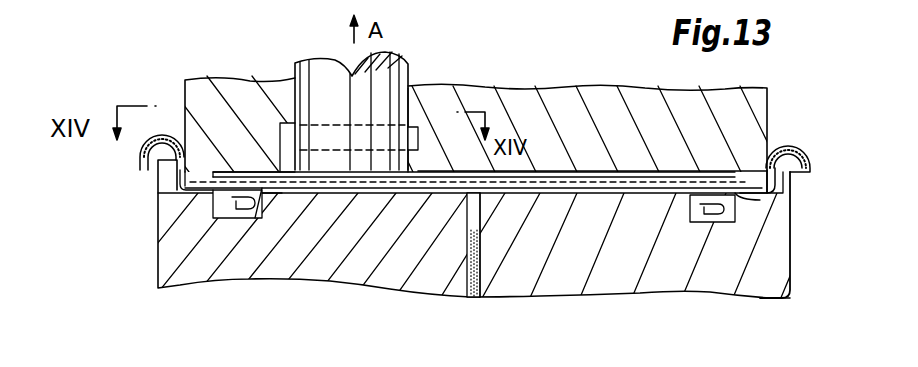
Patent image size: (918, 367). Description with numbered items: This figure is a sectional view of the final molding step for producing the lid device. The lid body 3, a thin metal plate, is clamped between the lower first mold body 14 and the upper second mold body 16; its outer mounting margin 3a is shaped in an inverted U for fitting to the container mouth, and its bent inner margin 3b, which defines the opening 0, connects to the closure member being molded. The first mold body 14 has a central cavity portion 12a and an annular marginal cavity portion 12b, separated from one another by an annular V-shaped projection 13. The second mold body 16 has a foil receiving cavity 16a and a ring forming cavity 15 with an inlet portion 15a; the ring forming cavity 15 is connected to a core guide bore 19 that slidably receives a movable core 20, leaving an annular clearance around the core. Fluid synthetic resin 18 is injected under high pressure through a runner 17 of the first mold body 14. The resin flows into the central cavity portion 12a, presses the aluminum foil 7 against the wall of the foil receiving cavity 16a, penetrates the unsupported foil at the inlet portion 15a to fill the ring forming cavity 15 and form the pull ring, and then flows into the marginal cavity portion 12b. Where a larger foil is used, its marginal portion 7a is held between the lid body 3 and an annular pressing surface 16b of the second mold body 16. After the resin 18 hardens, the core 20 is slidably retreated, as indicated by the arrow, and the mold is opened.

The lid body 3 is at (752, 197).
The outer mounting margin 3a is at (787, 147).
The inner margin 3b is at (740, 242).
The aluminum foil 7 is at (553, 177).
The marginal portion of the foil 7a is at (238, 168).
The central cavity portion 12a is at (377, 192).
The annular marginal cavity portion 12b is at (218, 213).
The annular V-shaped projection 13 is at (275, 194).
The first mold body 14 is at (170, 253).
The ring forming cavity 15 is at (473, 105).
The inlet portion 15a is at (287, 150).
The second mold body 16 is at (622, 117).
The foil receiving cavity 16a is at (703, 172).
The annular pressing surface 16b is at (187, 198).
The runner 17 is at (470, 297).
The fluid synthetic resin 18 is at (478, 262).
The core guide bore 19 is at (410, 103).
The movable core 20 is at (322, 80).
The opening 0 is at (256, 210).